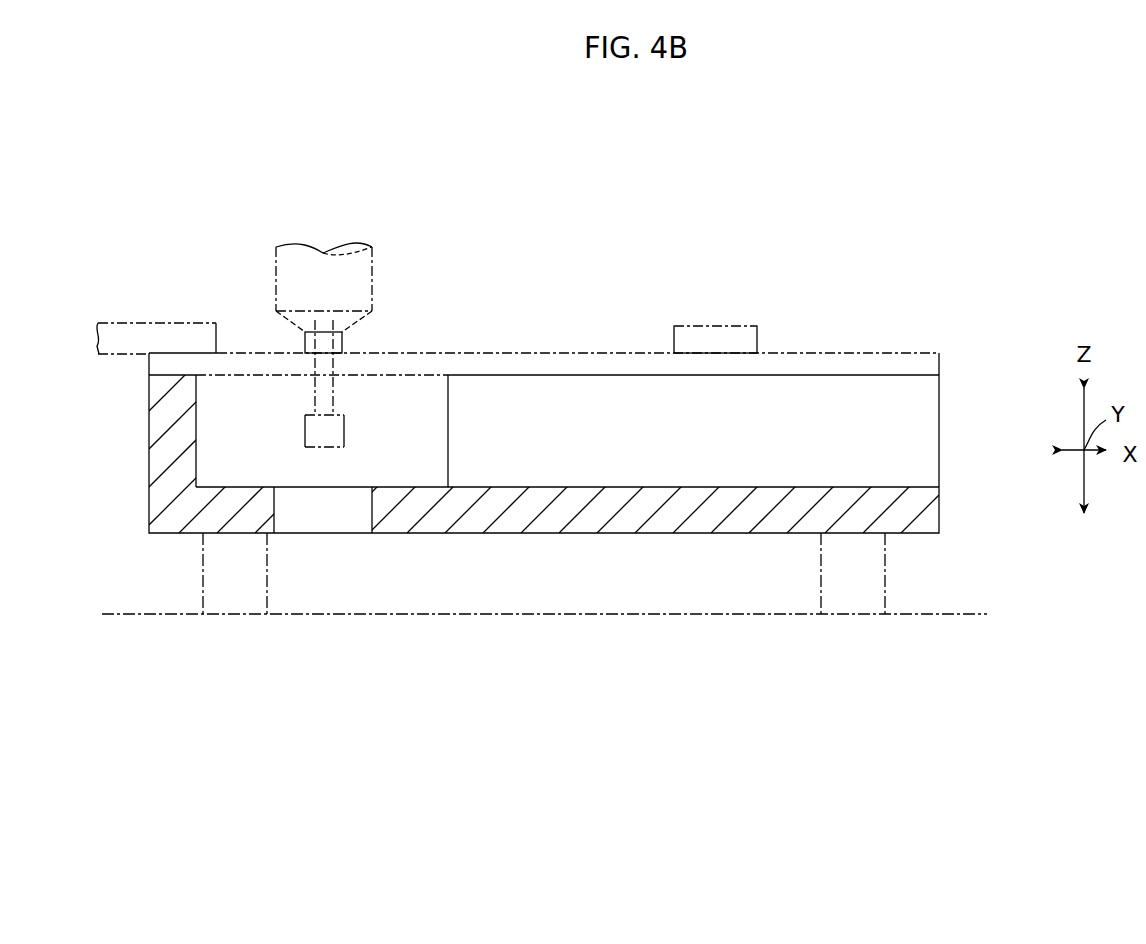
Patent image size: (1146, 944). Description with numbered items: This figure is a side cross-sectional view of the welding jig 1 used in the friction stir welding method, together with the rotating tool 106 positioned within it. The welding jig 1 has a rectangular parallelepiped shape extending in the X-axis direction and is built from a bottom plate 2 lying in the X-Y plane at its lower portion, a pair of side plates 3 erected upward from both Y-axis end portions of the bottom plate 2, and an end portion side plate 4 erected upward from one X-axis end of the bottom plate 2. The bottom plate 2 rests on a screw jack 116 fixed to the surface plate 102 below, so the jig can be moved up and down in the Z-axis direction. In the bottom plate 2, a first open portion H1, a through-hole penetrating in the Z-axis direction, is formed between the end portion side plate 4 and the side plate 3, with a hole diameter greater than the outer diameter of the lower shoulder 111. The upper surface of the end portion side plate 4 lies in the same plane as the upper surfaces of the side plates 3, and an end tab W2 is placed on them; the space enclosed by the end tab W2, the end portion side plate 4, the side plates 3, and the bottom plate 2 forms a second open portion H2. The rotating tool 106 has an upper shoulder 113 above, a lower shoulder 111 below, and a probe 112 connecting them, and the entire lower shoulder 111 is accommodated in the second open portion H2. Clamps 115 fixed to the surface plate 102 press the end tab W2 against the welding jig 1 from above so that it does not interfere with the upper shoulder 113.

The welding jig 1 is at (918, 304).
The bottom plate 2 is at (600, 512).
The side plate 3 is at (591, 412).
The end portion side plate 4 is at (160, 423).
The surface plate 102 is at (757, 625).
The rotating tool 106 is at (373, 289).
The lower shoulder 111 is at (330, 432).
The probe 112 is at (327, 393).
The upper shoulder 113 is at (353, 288).
The clamp 115 is at (160, 336).
The screw jack 116 is at (220, 572).
The first open portion H1 is at (366, 510).
The second open portion H2 is at (196, 456).
The end tab W2 is at (529, 364).